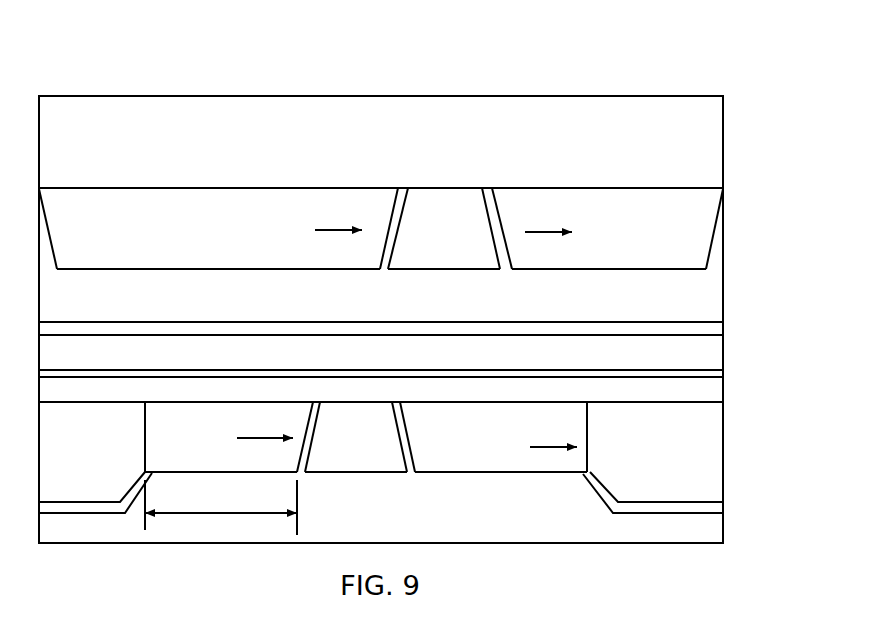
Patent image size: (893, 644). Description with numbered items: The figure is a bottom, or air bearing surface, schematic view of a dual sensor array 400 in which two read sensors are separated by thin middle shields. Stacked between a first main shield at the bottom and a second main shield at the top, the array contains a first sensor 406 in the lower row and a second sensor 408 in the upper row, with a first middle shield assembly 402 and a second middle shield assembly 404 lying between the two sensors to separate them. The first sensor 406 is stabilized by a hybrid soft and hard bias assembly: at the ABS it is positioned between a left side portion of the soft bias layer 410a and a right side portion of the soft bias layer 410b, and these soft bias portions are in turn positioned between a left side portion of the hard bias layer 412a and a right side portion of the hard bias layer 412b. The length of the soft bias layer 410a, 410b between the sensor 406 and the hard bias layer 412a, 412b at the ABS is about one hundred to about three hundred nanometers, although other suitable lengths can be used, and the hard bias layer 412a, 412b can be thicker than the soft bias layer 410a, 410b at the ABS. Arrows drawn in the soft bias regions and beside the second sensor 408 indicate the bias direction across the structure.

The dual sensor array 400 is at (722, 69).
The first middle shield assembly 402 is at (485, 359).
The second middle shield assembly 404 is at (488, 302).
The first sensor 406 is at (375, 467).
The second sensor 408 is at (466, 262).
The soft bias layer (left side portion) 410a is at (228, 459).
The soft bias layer (right side portion) 410b is at (503, 457).
The hard bias layer (left side portion) 412a is at (122, 466).
The hard bias layer (right side portion) 412b is at (687, 476).